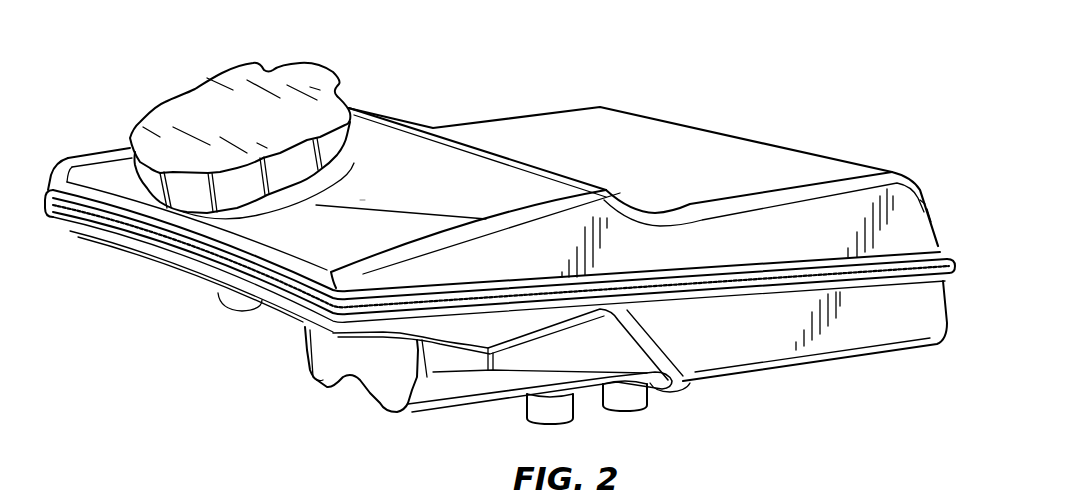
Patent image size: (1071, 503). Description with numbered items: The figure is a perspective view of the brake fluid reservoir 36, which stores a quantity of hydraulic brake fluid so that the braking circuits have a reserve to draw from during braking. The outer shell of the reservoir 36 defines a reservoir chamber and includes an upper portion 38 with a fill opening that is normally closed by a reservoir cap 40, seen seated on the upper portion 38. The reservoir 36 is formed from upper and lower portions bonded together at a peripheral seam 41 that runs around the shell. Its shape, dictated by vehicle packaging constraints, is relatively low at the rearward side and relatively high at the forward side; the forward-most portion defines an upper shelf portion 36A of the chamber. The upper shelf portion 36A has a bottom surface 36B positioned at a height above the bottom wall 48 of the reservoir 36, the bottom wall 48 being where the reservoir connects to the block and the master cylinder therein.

The brake fluid reservoir 36 is at (668, 75).
The upper shelf portion 36A is at (375, 106).
The bottom surface 36B is at (372, 338).
The upper portion 38 is at (400, 178).
The reservoir cap 40 is at (197, 110).
The peripheral seam 41 is at (782, 283).
The bottom wall 48 is at (444, 412).